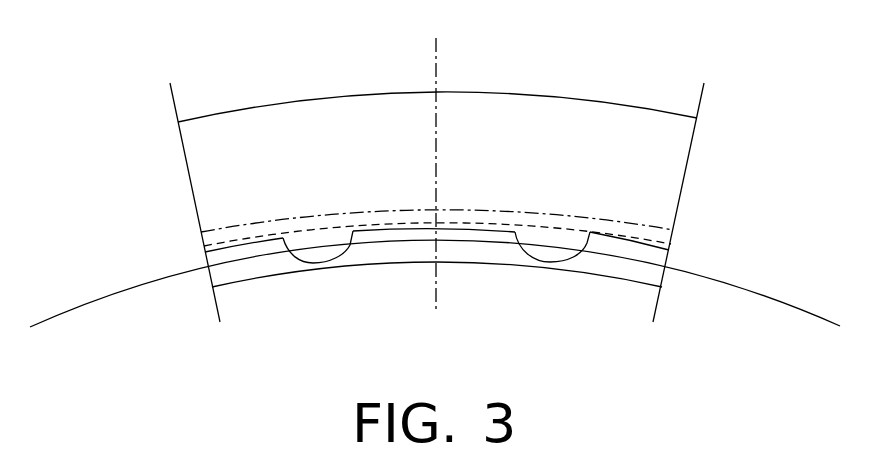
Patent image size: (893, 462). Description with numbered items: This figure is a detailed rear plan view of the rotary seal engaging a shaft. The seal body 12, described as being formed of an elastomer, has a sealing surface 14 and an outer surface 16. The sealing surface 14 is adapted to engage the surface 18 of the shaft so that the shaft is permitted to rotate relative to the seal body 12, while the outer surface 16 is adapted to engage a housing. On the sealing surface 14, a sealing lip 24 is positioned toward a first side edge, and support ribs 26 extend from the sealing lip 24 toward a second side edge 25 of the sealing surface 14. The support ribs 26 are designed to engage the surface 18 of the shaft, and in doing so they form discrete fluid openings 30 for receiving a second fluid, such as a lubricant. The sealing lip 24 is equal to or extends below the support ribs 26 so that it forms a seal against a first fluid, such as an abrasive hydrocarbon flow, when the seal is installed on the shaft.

The seal body 12 is at (402, 130).
The sealing surface 14 is at (412, 280).
The outer surface 16 is at (536, 96).
The surface 18 is at (120, 294).
The sealing lip 24 is at (287, 275).
The second side edge 25 is at (650, 167).
The support ribs 26 is at (553, 246).
The fluid openings 30 is at (403, 240).